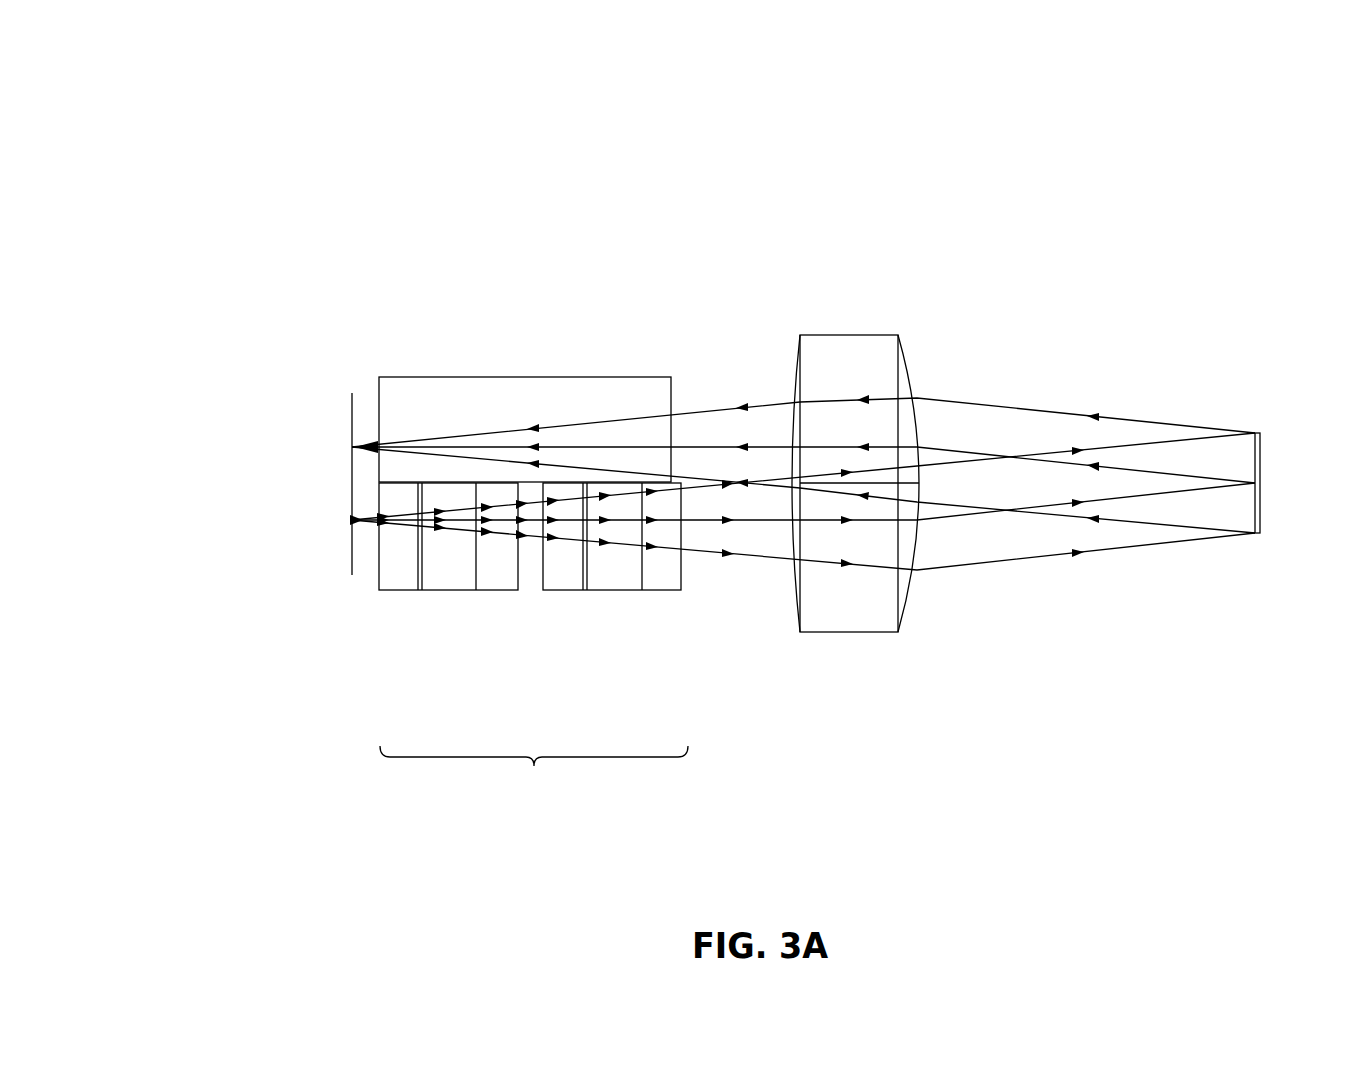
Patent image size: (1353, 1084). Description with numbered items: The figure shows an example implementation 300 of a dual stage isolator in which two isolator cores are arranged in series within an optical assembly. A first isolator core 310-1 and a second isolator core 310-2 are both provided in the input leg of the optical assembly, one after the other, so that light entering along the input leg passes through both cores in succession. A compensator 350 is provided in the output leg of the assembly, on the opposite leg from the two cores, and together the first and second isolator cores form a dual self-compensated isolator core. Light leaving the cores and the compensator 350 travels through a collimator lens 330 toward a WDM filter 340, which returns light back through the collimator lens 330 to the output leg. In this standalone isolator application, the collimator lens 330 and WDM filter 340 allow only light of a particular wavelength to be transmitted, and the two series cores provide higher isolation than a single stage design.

The example implementations of a dual stage isolator 300 is at (226, 63).
The compensator 350 is at (532, 366).
The collimator lens 330 is at (855, 322).
The WDM filter 340 is at (1255, 421).
The first isolator core 310-1 is at (452, 606).
The second isolator core 310-2 is at (615, 606).